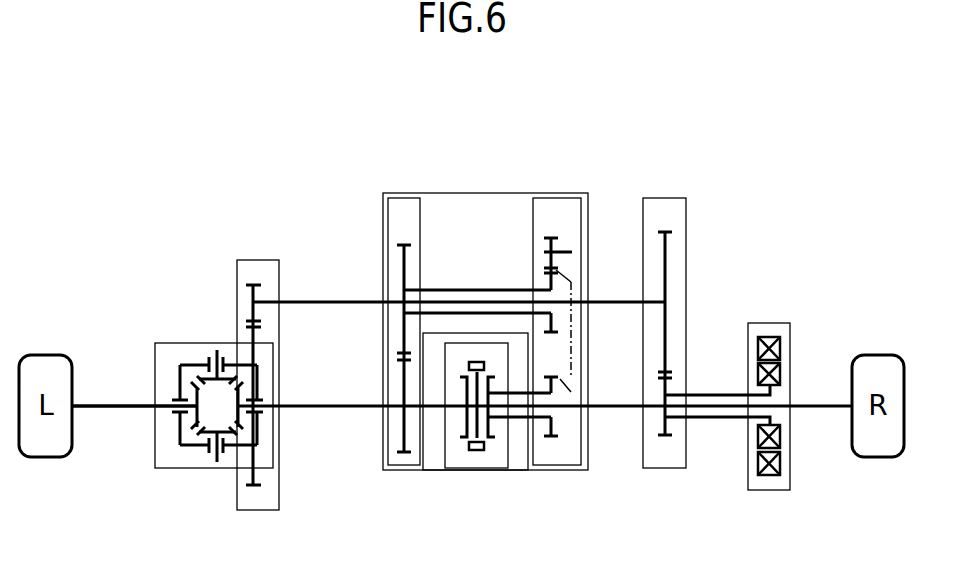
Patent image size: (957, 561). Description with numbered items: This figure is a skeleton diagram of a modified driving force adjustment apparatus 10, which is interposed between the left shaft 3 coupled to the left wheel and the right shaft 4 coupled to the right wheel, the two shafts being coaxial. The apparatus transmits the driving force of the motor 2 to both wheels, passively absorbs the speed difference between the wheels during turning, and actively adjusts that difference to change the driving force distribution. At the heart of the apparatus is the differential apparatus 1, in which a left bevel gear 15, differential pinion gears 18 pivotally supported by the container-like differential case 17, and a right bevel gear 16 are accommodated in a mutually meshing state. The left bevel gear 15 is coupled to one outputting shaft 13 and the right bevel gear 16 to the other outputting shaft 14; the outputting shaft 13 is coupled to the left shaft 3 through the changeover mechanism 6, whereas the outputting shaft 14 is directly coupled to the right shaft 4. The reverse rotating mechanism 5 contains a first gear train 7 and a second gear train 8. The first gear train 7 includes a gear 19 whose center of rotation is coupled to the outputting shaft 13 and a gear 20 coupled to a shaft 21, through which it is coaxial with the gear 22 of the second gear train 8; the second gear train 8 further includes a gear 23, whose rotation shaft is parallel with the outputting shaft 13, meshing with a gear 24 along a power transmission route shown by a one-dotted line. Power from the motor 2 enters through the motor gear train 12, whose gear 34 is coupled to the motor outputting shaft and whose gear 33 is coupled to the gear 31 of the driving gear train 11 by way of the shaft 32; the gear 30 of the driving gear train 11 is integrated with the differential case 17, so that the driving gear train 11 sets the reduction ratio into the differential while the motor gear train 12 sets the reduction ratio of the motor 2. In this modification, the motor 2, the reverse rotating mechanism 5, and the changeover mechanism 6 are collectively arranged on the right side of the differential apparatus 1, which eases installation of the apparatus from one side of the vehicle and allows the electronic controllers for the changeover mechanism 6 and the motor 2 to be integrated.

The driving force adjustment apparatus 10 is at (164, 155).
The differential apparatus 1 is at (172, 343).
The motor 2 is at (770, 323).
The left shaft 3 is at (104, 404).
The outputting shaft 13 is at (134, 379).
The right shaft 4 is at (816, 404).
The reverse rotating mechanism 5 is at (478, 193).
The changeover mechanism 6 is at (478, 471).
The first gear train 7 is at (405, 193).
The second gear train 8 is at (560, 198).
The driving gear train 11 is at (258, 260).
The motor gear train 12 is at (665, 198).
The outputting shaft 14 is at (300, 404).
The left bevel gear 15 is at (192, 426).
The right bevel gear 16 is at (243, 422).
The differential case 17 is at (190, 448).
The differential pinion gears 18 is at (203, 372).
The gear 19 is at (402, 385).
The gear 20 is at (403, 264).
The shaft 21 is at (502, 289).
The gear 22 is at (556, 322).
The gear 23 is at (557, 245).
The gear 24 is at (557, 431).
The gear 30 is at (257, 330).
The gear 31 is at (256, 294).
The shaft 32 is at (448, 300).
The gear 33 is at (667, 427).
The gear 34 is at (718, 394).